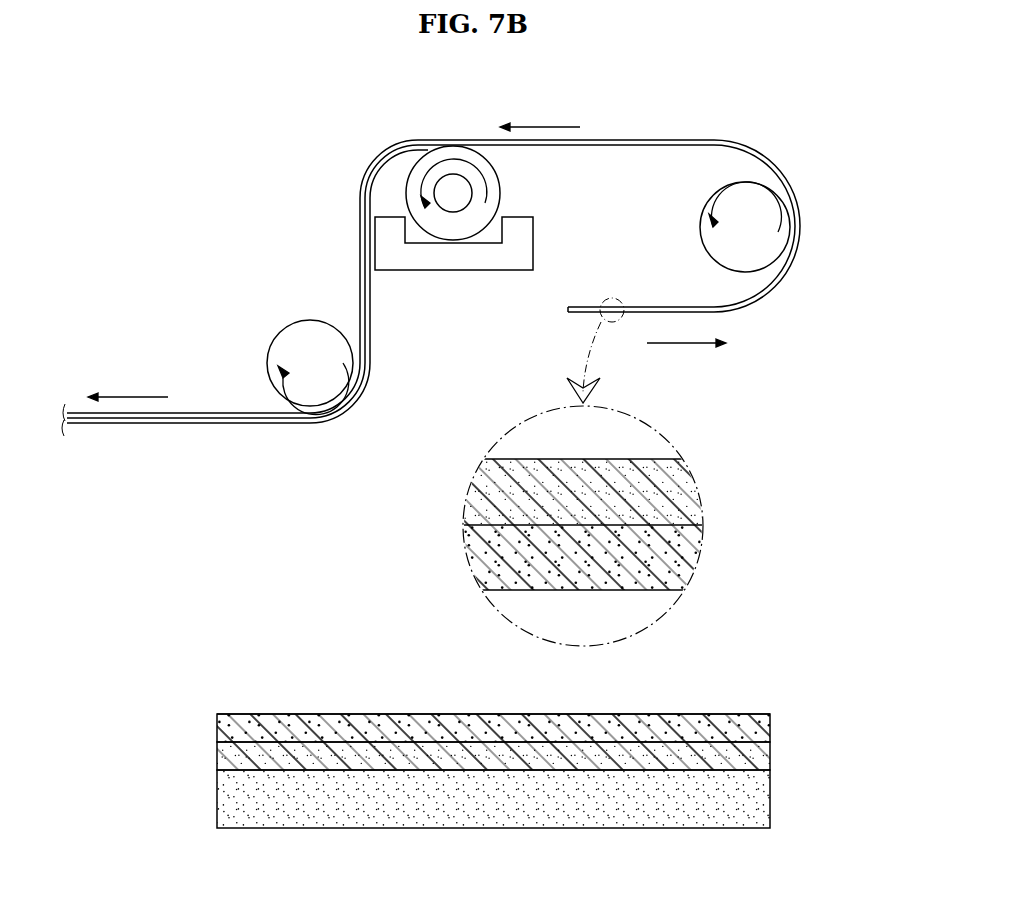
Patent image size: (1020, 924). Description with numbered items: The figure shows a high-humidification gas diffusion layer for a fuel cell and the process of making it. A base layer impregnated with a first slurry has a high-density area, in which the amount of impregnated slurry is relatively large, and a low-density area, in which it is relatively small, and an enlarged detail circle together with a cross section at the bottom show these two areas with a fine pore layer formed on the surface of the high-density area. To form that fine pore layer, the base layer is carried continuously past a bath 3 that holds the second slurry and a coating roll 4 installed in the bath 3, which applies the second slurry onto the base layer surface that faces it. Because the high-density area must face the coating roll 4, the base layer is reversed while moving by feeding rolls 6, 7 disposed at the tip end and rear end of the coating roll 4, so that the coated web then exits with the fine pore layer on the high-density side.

The bath 3 is at (452, 259).
The coating roll 4 is at (450, 160).
The feeding roll 6 is at (760, 243).
The feeding roll 7 is at (308, 345).